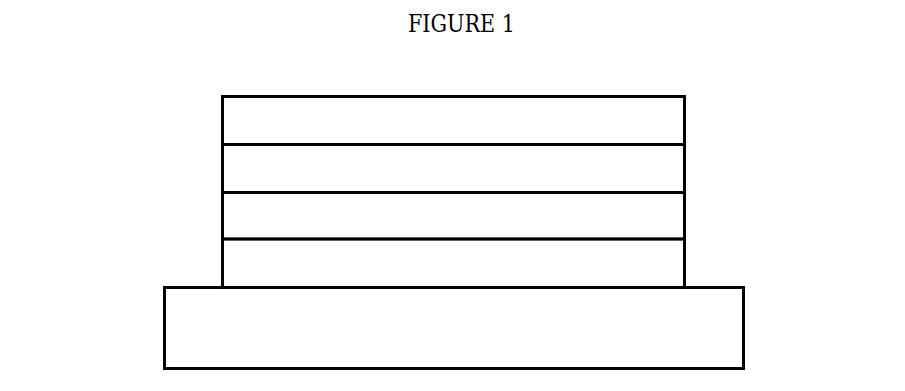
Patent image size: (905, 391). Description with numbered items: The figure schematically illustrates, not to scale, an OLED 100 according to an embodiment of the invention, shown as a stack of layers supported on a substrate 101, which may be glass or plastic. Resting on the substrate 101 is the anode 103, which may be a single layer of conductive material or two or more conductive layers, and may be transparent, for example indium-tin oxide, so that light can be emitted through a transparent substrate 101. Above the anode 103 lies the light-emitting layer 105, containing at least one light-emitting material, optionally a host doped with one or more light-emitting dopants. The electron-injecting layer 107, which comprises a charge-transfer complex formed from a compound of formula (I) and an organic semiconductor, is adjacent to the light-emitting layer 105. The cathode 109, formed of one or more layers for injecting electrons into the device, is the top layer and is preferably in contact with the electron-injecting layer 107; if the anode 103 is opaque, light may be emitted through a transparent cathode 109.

The OLED 100 is at (147, 165).
The substrate 101 is at (773, 320).
The anode 103 is at (694, 265).
The light-emitting layer 105 is at (693, 213).
The electron-injecting layer 107 is at (694, 167).
The cathode 109 is at (689, 123).